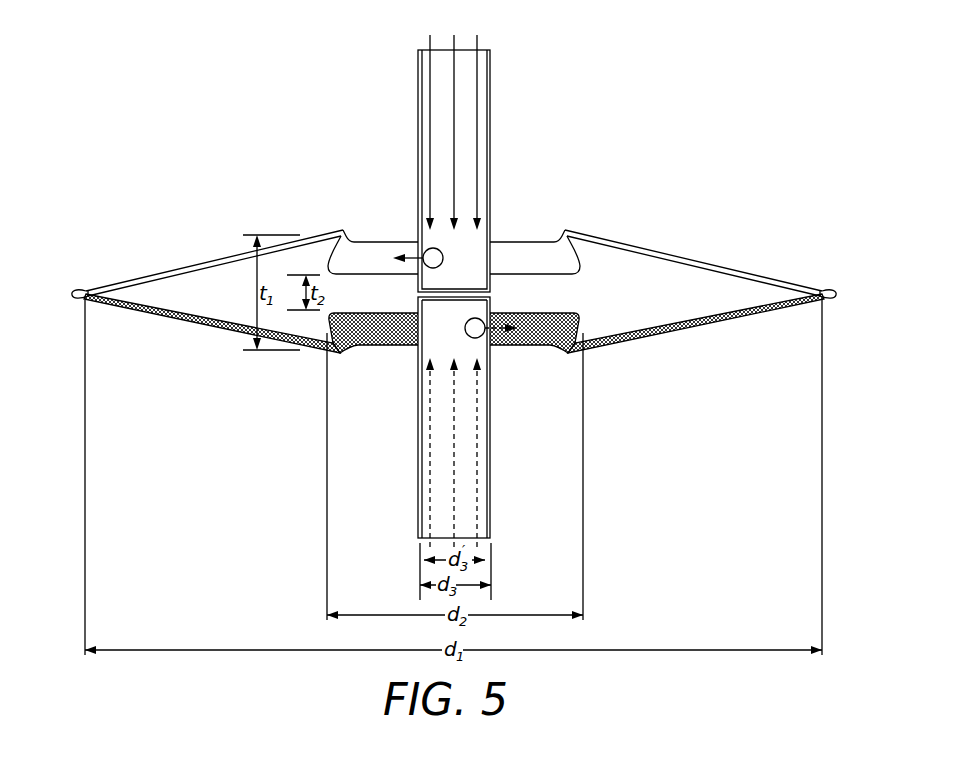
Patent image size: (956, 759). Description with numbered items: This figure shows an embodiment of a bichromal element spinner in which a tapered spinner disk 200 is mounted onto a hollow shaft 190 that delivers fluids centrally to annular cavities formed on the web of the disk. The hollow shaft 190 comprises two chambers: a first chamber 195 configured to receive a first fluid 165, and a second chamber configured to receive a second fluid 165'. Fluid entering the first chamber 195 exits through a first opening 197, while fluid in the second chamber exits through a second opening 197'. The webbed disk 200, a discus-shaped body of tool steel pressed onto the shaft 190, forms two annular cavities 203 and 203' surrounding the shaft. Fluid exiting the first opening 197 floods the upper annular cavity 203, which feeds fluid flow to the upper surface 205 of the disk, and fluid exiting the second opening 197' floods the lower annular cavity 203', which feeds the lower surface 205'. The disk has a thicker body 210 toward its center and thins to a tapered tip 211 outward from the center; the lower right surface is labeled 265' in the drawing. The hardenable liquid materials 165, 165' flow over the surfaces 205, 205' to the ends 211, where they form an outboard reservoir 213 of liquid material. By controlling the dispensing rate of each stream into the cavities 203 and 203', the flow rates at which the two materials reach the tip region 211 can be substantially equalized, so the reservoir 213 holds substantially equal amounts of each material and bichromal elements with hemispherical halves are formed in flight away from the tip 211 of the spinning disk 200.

The first fluid 165 is at (461, 146).
The second fluid 165' is at (334, 431).
The hollow shaft 190 is at (515, 115).
The first chamber 195 is at (484, 97).
The first opening 197 is at (436, 269).
The second opening 197' is at (477, 319).
The spinner disk 200 is at (641, 189).
The upper annular cavity 203 is at (454, 235).
The lower annular cavity 203' is at (454, 351).
The upper surface 205 is at (420, 263).
The lower surface 205' is at (410, 328).
The thicker body 210 is at (595, 246).
The tapered tip 211 is at (100, 291).
The outboard reservoir 213 is at (70, 292).
The lower right membrane arm 265' is at (696, 323).